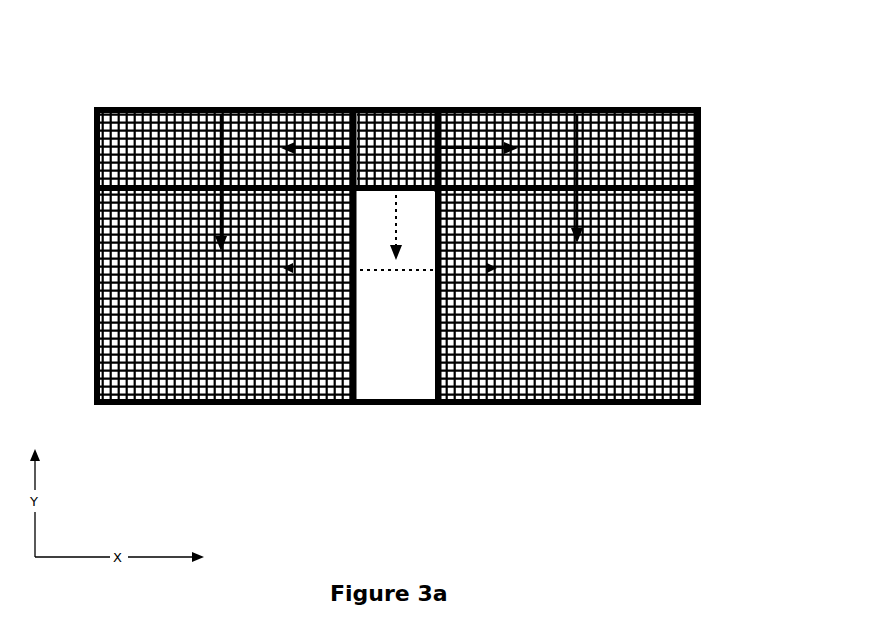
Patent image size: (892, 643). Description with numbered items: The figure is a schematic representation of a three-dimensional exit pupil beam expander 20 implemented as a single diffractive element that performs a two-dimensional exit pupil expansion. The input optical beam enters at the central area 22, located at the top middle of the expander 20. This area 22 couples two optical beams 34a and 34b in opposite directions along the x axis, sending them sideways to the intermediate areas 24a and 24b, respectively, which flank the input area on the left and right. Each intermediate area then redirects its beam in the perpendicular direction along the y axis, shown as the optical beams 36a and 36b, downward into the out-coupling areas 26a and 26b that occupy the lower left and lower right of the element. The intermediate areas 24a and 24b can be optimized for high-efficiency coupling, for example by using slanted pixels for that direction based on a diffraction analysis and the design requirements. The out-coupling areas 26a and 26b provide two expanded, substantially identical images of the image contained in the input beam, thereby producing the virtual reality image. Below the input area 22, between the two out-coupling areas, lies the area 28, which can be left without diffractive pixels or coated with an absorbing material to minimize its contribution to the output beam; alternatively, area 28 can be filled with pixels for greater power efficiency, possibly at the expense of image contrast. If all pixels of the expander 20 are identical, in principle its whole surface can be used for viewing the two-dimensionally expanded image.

The exit pupil beam expander 20 is at (327, 73).
The input area 22 is at (410, 128).
The intermediate area 24a is at (195, 128).
The intermediate area 24b is at (563, 142).
The out-coupling area 26a is at (195, 380).
The out-coupling area 26b is at (590, 378).
The area 28 is at (405, 383).
The optical beam 34a is at (305, 145).
The optical beam 34b is at (482, 138).
The optical beam 36a is at (217, 227).
The optical beam 36b is at (582, 222).